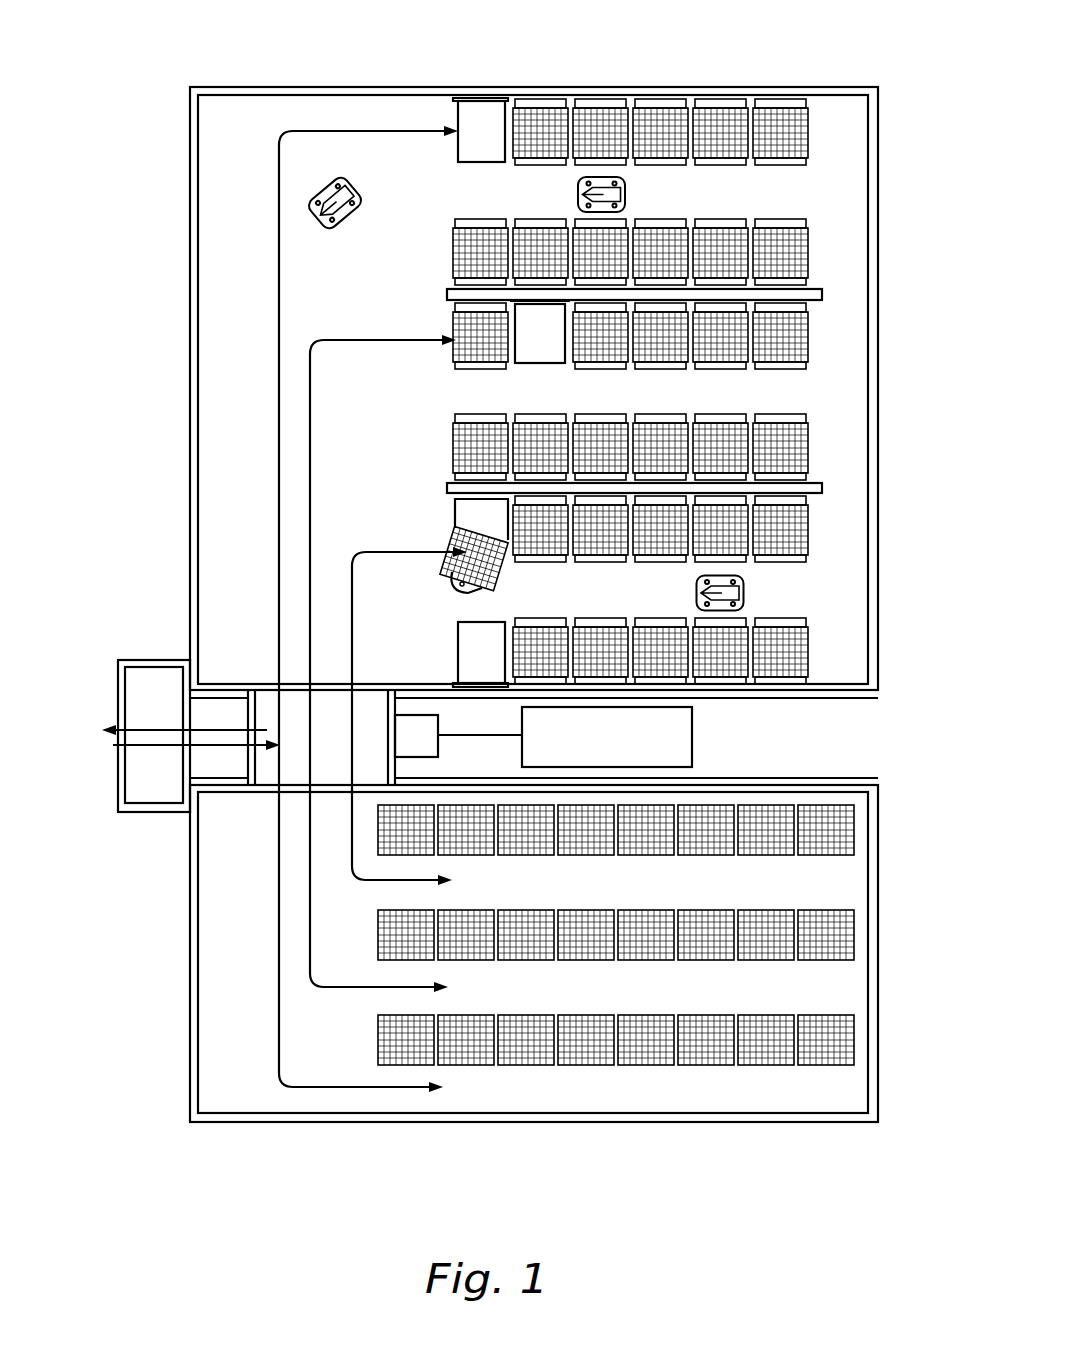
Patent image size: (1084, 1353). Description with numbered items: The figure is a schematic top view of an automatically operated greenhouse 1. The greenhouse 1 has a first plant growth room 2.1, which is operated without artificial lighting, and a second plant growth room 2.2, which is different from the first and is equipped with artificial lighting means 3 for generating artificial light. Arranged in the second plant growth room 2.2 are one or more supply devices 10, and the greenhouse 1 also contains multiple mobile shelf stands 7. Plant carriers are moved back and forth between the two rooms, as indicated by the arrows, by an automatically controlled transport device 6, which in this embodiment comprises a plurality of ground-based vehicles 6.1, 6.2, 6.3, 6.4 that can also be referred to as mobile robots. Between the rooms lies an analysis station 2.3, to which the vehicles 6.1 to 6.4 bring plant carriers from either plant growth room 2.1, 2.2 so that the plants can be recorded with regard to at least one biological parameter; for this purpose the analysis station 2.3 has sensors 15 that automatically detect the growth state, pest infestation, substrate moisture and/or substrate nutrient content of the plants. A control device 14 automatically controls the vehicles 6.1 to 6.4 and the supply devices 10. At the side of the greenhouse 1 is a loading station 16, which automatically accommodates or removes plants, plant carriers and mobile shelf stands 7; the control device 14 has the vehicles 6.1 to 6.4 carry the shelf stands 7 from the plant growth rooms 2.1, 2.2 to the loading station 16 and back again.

The greenhouse 1 is at (126, 115).
The first plant growth room 2.1 is at (190, 1011).
The second plant growth room 2.2 is at (190, 411).
The analysis station 2.3 is at (266, 703).
The artificial lighting means 3 is at (474, 176).
The automatically controlled transport device 6 is at (537, 416).
The vehicle 6.1 is at (353, 217).
The vehicle 6.2 is at (630, 196).
The vehicle 6.3 is at (450, 587).
The vehicle 6.4 is at (697, 594).
The mobile shelf stand 7 is at (705, 352).
The supply device 10 is at (485, 121).
The control device 14 is at (668, 730).
The sensors 15 is at (418, 746).
The loading station 16 is at (146, 812).